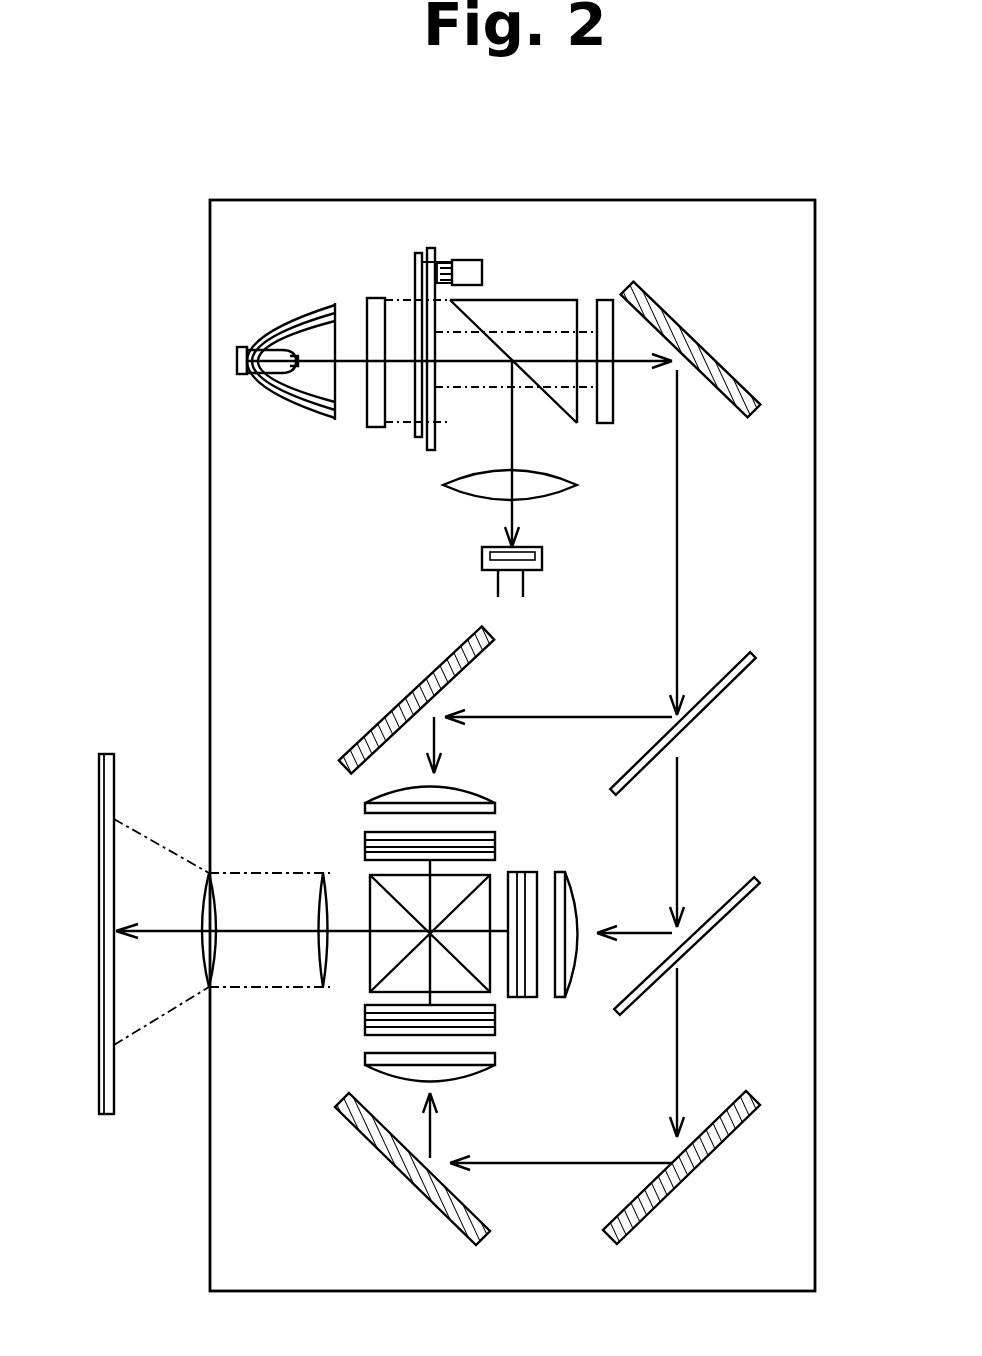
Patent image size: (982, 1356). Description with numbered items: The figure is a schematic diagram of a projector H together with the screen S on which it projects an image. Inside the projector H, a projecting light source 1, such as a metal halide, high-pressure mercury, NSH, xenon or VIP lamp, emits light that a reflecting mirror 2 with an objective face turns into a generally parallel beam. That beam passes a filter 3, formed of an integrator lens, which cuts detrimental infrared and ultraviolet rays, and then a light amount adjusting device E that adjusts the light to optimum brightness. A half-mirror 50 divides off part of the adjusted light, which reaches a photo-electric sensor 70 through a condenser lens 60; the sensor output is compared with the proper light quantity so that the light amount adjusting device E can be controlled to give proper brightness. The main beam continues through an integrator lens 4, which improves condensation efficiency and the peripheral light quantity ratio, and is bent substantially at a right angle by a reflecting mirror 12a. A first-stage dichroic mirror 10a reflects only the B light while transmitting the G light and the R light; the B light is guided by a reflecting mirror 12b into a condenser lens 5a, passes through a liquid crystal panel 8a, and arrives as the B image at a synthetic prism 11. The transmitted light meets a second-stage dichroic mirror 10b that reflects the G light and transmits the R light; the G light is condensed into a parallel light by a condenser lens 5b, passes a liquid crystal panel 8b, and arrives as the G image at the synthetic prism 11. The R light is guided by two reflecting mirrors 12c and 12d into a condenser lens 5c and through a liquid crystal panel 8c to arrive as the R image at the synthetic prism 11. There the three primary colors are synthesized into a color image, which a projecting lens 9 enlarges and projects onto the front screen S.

The projector H is at (210, 406).
The projecting light source 1 is at (268, 334).
The reflecting mirror 2 is at (315, 338).
The filter 3 is at (373, 298).
The light amount adjusting device E is at (466, 258).
The half-mirror 50 is at (539, 316).
The integrator lens 4 is at (605, 300).
The reflecting mirror 12a is at (705, 348).
The condenser lens 60 is at (445, 484).
The photo-electric sensor 70 is at (482, 558).
The dichroic mirror 10a is at (713, 703).
The B light B is at (549, 723).
The reflecting mirror 12b is at (421, 686).
The condenser lens 5a is at (455, 790).
The liquid crystal panel 8a is at (365, 840).
The synthetic prism 11 is at (495, 876).
The liquid crystal panel 8c is at (365, 1020).
The condenser lens 5c is at (460, 1072).
The R light R is at (547, 1131).
The reflecting mirror 12d is at (393, 1162).
The reflecting mirror 12c is at (680, 1194).
The liquid crystal panel 8b is at (530, 998).
The condenser lens 5b is at (572, 998).
The G light G is at (634, 913).
The dichroic mirror 10b is at (712, 945).
The projecting lens 9 is at (260, 870).
The screen S is at (99, 752).